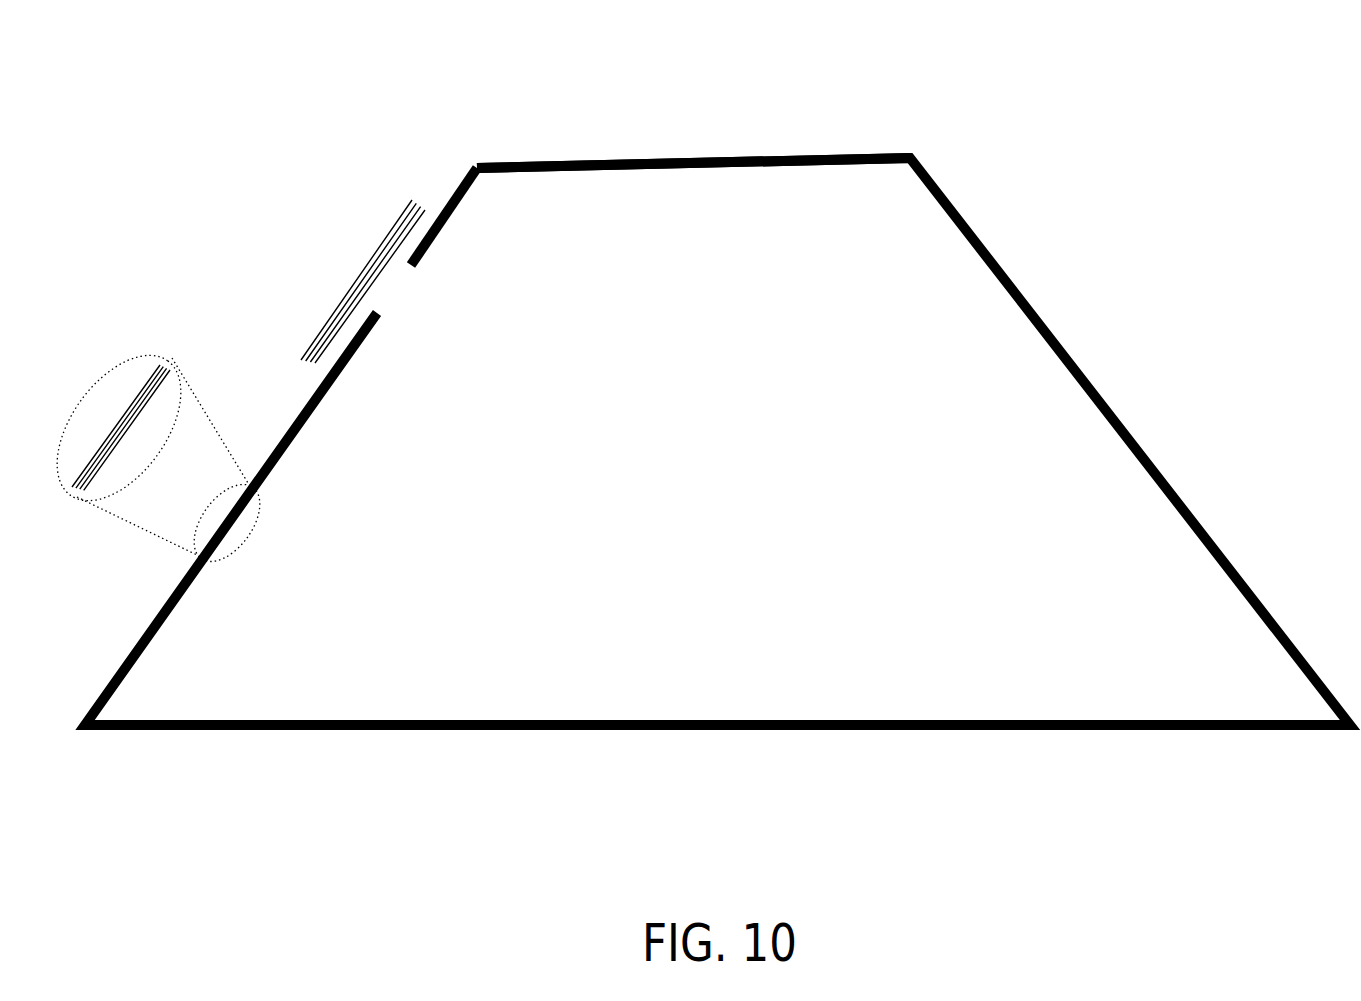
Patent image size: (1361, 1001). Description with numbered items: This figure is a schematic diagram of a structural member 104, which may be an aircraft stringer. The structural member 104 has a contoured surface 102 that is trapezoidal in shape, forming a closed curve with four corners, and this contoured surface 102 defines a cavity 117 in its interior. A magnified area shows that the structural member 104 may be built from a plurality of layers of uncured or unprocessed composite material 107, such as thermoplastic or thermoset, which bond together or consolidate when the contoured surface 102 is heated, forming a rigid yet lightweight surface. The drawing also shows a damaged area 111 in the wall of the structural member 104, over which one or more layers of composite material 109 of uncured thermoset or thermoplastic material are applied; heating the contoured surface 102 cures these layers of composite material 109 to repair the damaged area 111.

The structural member 104 is at (1046, 94).
The contoured surface 102 is at (682, 172).
The damaged area 111 is at (422, 322).
The layers of composite material 109 is at (341, 240).
The layers of uncured or unprocessed composite material 107 is at (115, 376).
The cavity 117 is at (735, 478).